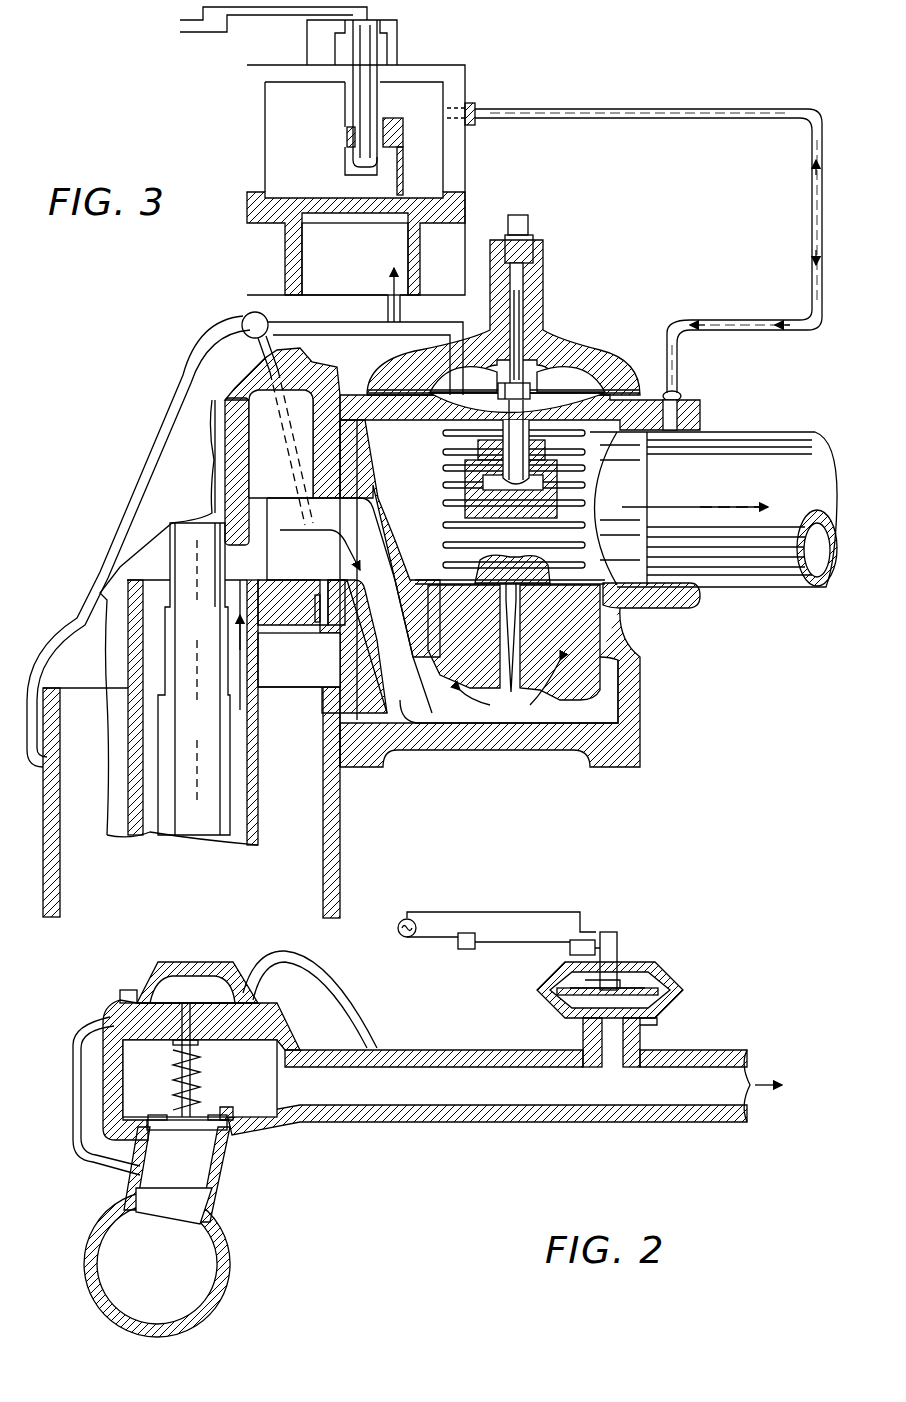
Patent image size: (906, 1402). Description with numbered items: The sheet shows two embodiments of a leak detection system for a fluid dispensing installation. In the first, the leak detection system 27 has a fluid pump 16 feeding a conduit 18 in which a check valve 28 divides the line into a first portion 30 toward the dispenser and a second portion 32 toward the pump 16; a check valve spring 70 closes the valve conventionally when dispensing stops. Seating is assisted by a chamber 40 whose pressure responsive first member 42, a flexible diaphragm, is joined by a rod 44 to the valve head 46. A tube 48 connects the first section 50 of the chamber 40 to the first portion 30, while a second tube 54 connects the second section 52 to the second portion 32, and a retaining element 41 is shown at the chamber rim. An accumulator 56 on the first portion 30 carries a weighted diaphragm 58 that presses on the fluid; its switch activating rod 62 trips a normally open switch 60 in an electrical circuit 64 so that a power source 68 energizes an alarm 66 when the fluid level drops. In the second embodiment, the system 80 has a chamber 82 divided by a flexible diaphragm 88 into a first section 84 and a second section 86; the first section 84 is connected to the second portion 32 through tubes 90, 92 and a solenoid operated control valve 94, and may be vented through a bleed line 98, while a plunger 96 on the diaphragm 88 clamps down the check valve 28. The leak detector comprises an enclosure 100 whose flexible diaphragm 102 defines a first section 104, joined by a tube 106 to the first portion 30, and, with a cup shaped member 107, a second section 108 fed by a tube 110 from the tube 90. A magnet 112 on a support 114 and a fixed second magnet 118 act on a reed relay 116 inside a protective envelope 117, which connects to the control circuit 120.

In FIG. 2, the fluid pump 16 is at (200, 1262).
In FIG. 3, the conduit 18 is at (587, 398).
In FIG. 2, the conduit 18 is at (300, 1124).
In FIG. 2, the leak detection system 27 is at (483, 1178).
In FIG. 3, the check valve 28 is at (612, 608).
In FIG. 2, the check valve 28 is at (222, 1115).
In FIG. 3, the first portion of the conduit 30 is at (790, 590).
In FIG. 2, the first portion of the conduit 30 is at (548, 1122).
In FIG. 3, the second portion of the conduit 32 is at (262, 830).
In FIG. 2, the second portion of the conduit 32 is at (232, 1180).
In FIG. 2, the chamber 40 is at (197, 964).
In FIG. 2, the retaining nut 41 is at (133, 988).
In FIG. 2, the pressure responsive first member 42 is at (140, 990).
In FIG. 2, the rod 44 is at (200, 1068).
In FIG. 2, the valve head 46 is at (162, 1118).
In FIG. 2, the tube 48 is at (350, 1000).
In FIG. 2, the first section of the chamber 50 is at (205, 985).
In FIG. 2, the second section of the chamber 52 is at (103, 1020).
In FIG. 2, the second tube 54 is at (73, 1085).
In FIG. 2, the accumulator 56 is at (672, 975).
In FIG. 2, the weighted diaphragm 58 is at (640, 982).
In FIG. 2, the switch 60 is at (570, 942).
In FIG. 2, the switch activating rod 62 is at (596, 930).
In FIG. 2, the electrical circuit 64 is at (492, 928).
In FIG. 2, the alarm 66 is at (466, 950).
In FIG. 2, the power source 68 is at (408, 918).
In FIG. 3, the check valve spring 70 is at (447, 515).
In FIG. 2, the check valve spring 70 is at (173, 1058).
In FIG. 3, the leak detection system 80 is at (712, 768).
In FIG. 3, the chamber 82 is at (560, 345).
In FIG. 3, the first section of the chamber 84 is at (571, 379).
In FIG. 3, the second section of the chamber 86 is at (503, 398).
In FIG. 3, the flexible diaphragm 88 is at (463, 379).
In FIG. 3, the tube 90 is at (328, 335).
In FIG. 3, the tube 92 is at (262, 357).
In FIG. 3, the solenoid operated control valve 94 is at (245, 316).
In FIG. 3, the plunger 96 is at (465, 468).
In FIG. 3, the bleed line 98 is at (175, 388).
In FIG. 3, the enclosure 100 is at (250, 140).
In FIG. 3, the flexible diaphragm 102 is at (305, 205).
In FIG. 3, the first section of the enclosure 104 is at (294, 131).
In FIG. 3, the tube 106 is at (735, 109).
In FIG. 3, the cup shaped member 107 is at (392, 262).
In FIG. 3, the second section of the enclosure 108 is at (355, 259).
In FIG. 3, the tube 110 is at (400, 305).
In FIG. 3, the magnet 112 is at (392, 120).
In FIG. 3, the support 114 is at (403, 162).
In FIG. 3, the reed relay 116 is at (345, 162).
In FIG. 3, the protective envelope 117 is at (377, 100).
In FIG. 3, the second magnet 118 is at (345, 132).
In FIG. 3, the control circuit 120 is at (160, 50).